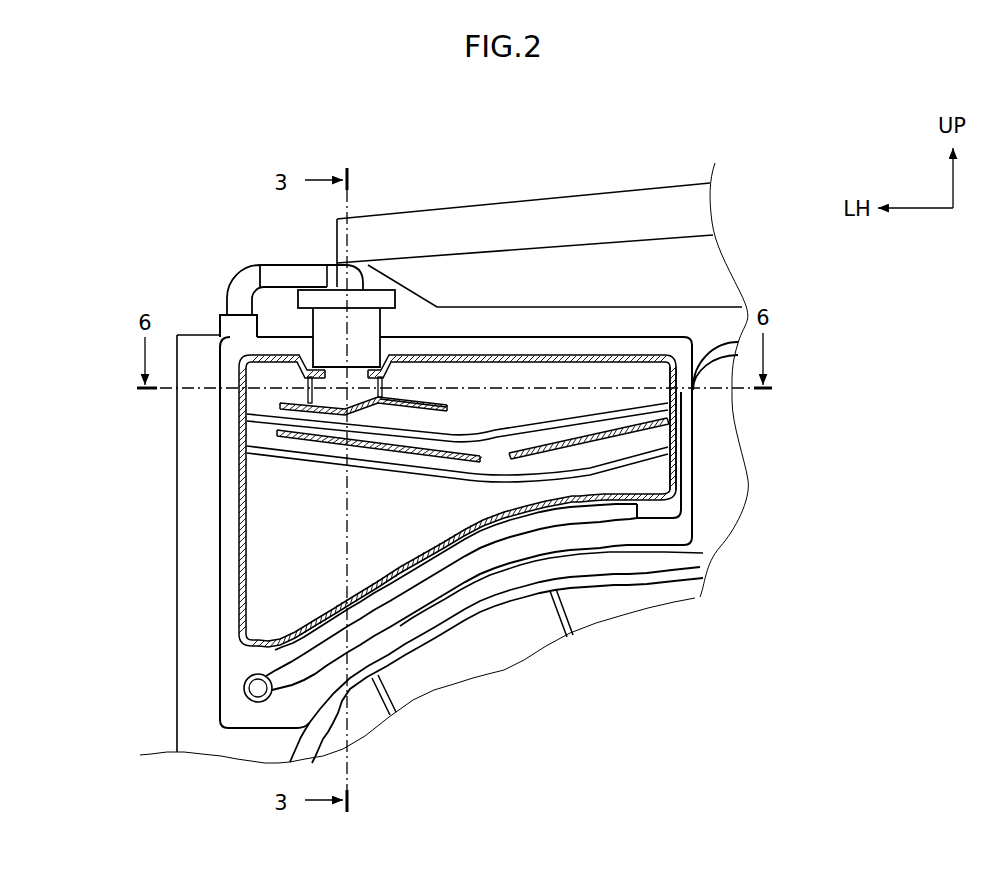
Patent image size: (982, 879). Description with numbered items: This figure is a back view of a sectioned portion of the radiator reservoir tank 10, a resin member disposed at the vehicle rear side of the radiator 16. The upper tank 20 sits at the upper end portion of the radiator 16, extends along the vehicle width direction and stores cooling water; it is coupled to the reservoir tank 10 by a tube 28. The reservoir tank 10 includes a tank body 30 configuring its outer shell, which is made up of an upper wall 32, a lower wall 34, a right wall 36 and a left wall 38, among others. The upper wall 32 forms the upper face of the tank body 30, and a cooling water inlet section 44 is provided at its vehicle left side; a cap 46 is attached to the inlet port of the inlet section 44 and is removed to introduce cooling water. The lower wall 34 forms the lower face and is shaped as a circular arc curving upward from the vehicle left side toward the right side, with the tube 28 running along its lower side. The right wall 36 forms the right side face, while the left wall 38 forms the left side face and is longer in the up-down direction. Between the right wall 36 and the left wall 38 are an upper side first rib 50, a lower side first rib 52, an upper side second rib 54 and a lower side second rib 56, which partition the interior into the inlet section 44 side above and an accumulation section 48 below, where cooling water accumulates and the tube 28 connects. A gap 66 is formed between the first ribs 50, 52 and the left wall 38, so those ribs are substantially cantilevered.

The radiator reservoir tank 10 is at (362, 521).
The radiator 16 is at (173, 300).
The upper tank 20 is at (637, 238).
The tube 28 is at (697, 463).
The tank body 30 is at (238, 492).
The upper wall 32 is at (474, 449).
The lower wall 34 is at (426, 560).
The right wall 36 is at (673, 420).
The left wall 38 is at (240, 553).
The inlet section 44 is at (386, 323).
The cap 46 is at (312, 287).
The accumulation section 48 is at (283, 589).
The upper side first rib 50 is at (426, 396).
The lower side first rib 52 is at (548, 441).
The upper side second rib 54 is at (622, 403).
The lower side second rib 56 is at (578, 478).
The gap 66 is at (258, 432).